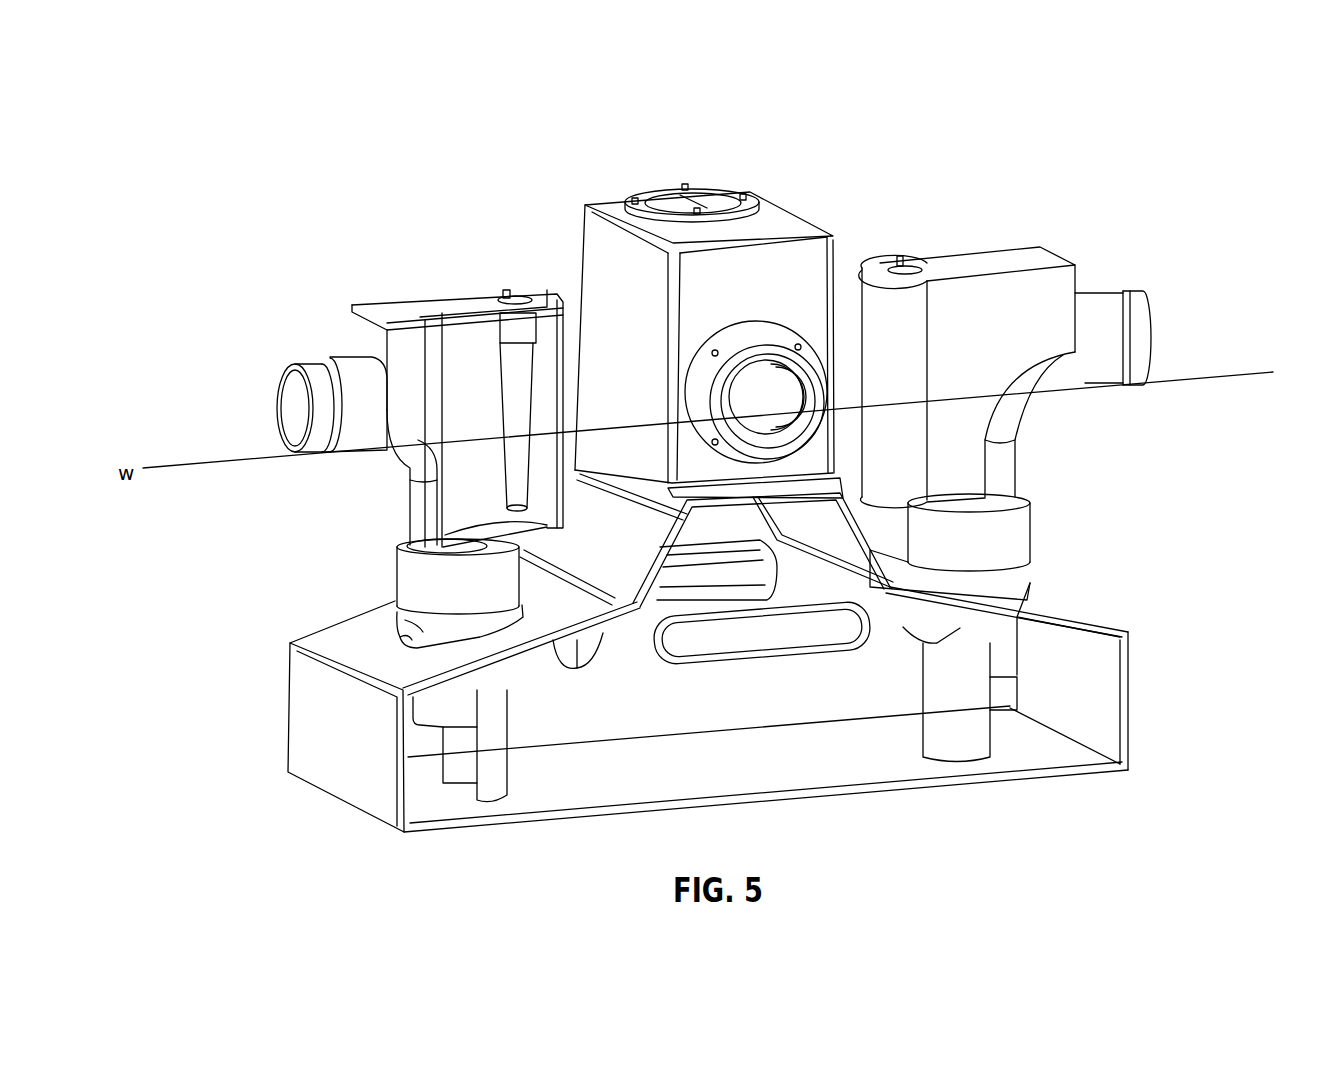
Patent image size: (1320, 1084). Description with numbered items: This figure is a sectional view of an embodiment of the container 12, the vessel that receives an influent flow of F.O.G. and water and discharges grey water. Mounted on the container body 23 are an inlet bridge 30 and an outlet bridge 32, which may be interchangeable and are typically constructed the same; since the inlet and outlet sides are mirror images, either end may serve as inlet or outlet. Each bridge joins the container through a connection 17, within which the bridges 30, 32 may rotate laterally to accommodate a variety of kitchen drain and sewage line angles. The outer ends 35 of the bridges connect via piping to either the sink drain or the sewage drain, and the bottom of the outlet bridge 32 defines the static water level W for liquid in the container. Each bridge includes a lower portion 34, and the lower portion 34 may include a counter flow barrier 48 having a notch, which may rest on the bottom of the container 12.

The container 12 is at (670, 154).
The connection 17 is at (440, 580).
The container body 23 is at (773, 706).
The inlet bridge 30 is at (477, 411).
The outlet bridge 32 is at (1006, 347).
The lower portion 34 is at (397, 620).
The end 35 is at (292, 412).
The counter flow barrier 48 is at (490, 793).